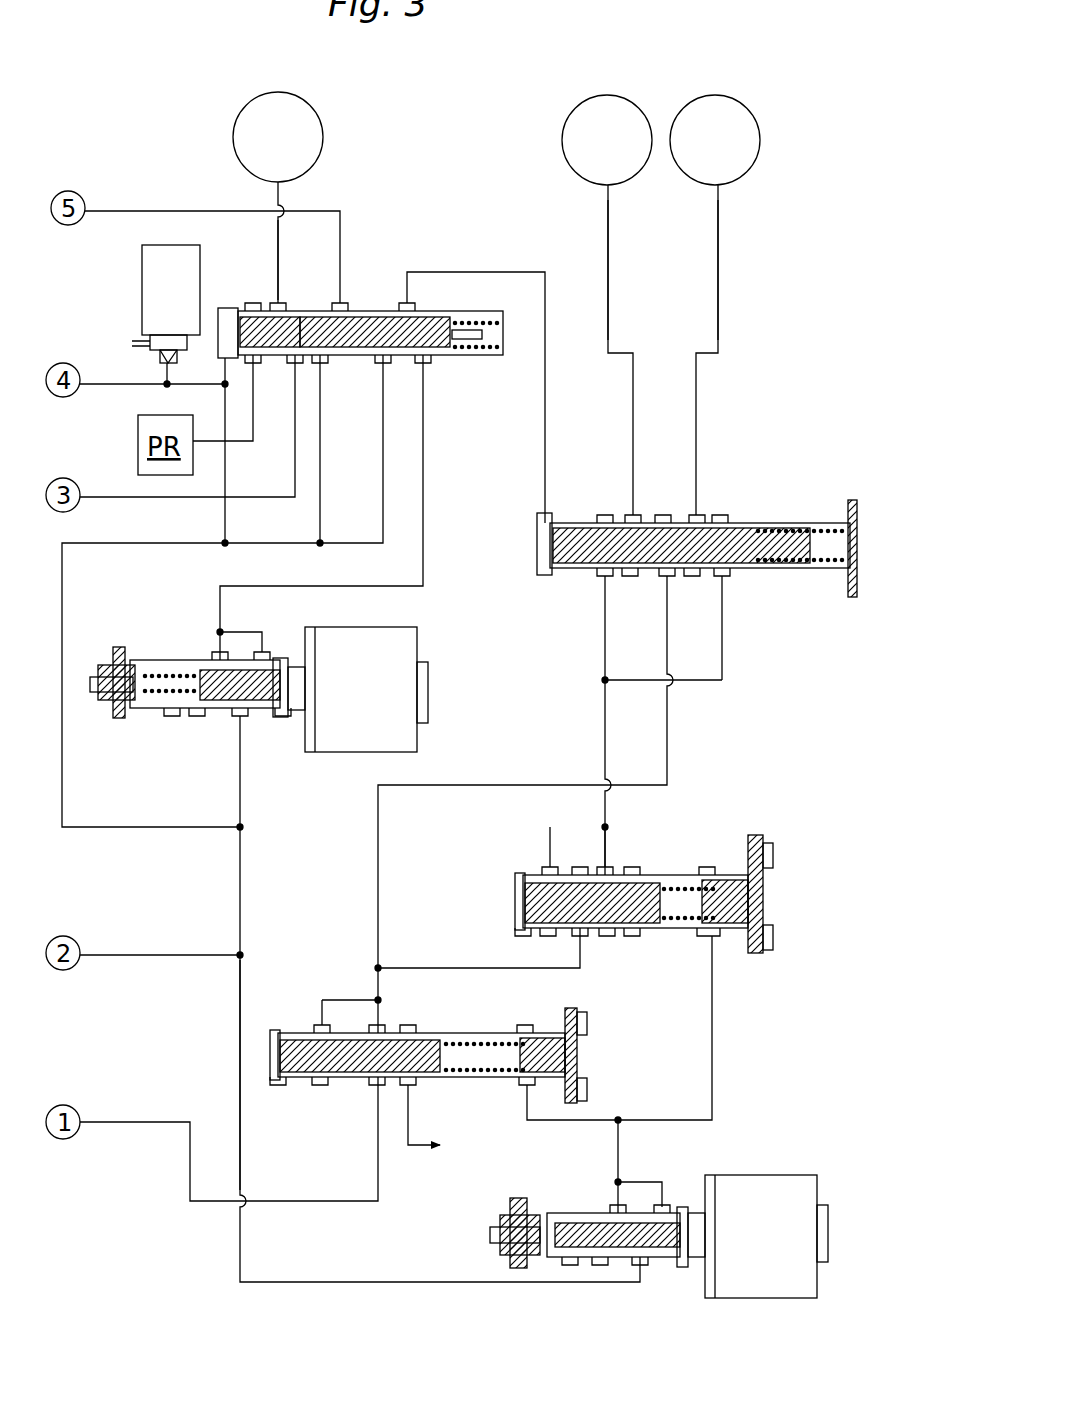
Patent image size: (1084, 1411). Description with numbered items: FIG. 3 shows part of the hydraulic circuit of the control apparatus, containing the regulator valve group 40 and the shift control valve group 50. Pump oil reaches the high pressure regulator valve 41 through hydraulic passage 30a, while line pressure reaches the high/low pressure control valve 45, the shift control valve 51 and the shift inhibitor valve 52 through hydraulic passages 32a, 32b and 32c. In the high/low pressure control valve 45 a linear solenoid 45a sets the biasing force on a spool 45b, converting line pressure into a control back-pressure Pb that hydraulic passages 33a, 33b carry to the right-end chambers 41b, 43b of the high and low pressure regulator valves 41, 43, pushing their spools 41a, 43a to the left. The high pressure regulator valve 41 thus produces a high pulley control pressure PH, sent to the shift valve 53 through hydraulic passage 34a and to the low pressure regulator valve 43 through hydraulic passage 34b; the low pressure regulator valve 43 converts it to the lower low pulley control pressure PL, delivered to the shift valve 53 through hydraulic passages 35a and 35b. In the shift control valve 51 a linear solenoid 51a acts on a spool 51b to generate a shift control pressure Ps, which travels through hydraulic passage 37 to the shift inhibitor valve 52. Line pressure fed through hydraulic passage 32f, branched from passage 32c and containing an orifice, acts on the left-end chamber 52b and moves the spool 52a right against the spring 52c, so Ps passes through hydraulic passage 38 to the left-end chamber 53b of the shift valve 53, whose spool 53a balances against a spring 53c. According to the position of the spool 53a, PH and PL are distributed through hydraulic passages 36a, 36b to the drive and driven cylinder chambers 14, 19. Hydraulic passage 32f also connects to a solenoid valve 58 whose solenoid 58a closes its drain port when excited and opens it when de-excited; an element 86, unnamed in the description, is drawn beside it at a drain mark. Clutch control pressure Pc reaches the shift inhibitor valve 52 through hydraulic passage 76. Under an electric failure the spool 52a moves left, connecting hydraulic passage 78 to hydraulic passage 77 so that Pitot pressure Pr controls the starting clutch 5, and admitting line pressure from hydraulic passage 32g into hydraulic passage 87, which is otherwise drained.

The starting clutch 5 is at (278, 197).
The drive cylinder chamber 14 is at (715, 305).
The driven cylinder chamber 19 is at (607, 305).
The hydraulic passage 87 is at (168, 211).
The hydraulic passage 77 is at (278, 243).
The solenoid valve 58 is at (139, 314).
The solenoid 58a is at (171, 290).
The drain port 86 is at (125, 343).
The shift control valve group 50 is at (460, 228).
The shift inhibitor valve 52 is at (357, 307).
The spool 52a is at (314, 320).
The left-end chamber 52b is at (230, 318).
The spring 52c is at (462, 322).
The hydraulic passage 36a is at (718, 272).
The hydraulic passage 36b is at (608, 257).
The hydraulic passage 78 is at (218, 420).
The hydraulic passage 76 is at (256, 497).
The hydraulic passage 32g is at (320, 500).
The hydraulic passage 32f is at (225, 527).
The hydraulic passage 32c is at (130, 543).
The hydraulic passage 32b is at (240, 795).
The hydraulic passage 32a is at (238, 1040).
The hydraulic passage 37 is at (423, 525).
The hydraulic passage 38 is at (545, 440).
The shift valve 53 is at (762, 492).
The spool 53a is at (660, 520).
The left-end chamber 53b is at (537, 565).
The spring 53c is at (795, 568).
The hydraulic passage 35a is at (722, 660).
The hydraulic passage 35b is at (605, 660).
The shift control valve 51 is at (350, 618).
The linear solenoid 51a is at (366, 689).
The spool 51b is at (230, 720).
The low pressure regulator valve 43 is at (697, 838).
The spool 43a is at (572, 930).
The right-end chamber 43b is at (690, 930).
The hydraulic passage 34a is at (378, 860).
The hydraulic passage 34b is at (445, 968).
The regulator valve group 40 is at (790, 948).
The high pressure regulator valve 41 is at (592, 1052).
The spool 41a is at (430, 1045).
The right-end chamber 41b is at (505, 1060).
The hydraulic passage 33a is at (562, 1122).
The hydraulic passage 33b is at (712, 1035).
The hydraulic passage 30a is at (150, 1122).
The high/low pressure control valve 45 is at (757, 1163).
The linear solenoid 45a is at (766, 1236).
The spool 45b is at (590, 1255).